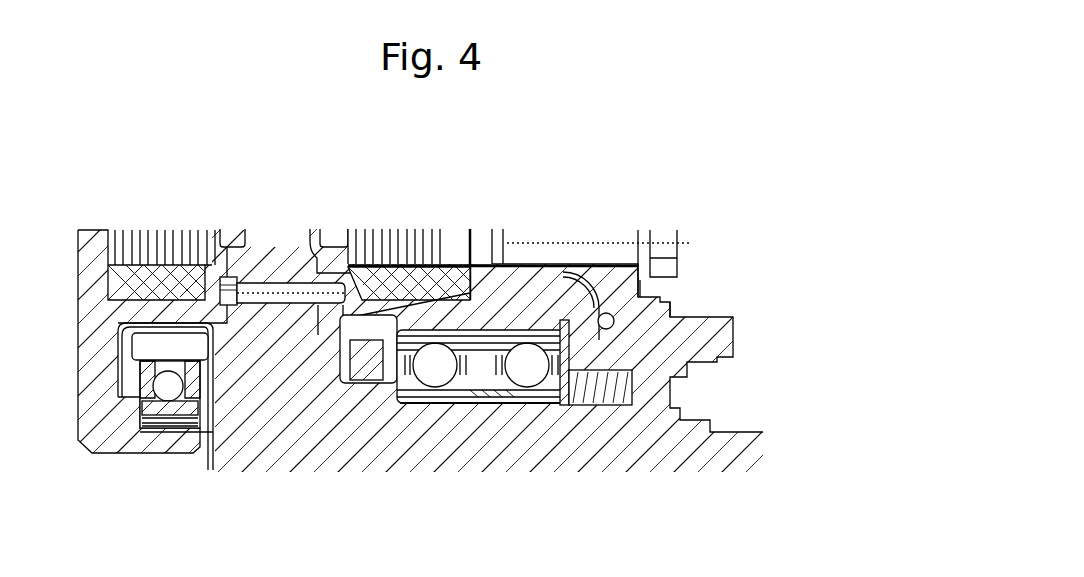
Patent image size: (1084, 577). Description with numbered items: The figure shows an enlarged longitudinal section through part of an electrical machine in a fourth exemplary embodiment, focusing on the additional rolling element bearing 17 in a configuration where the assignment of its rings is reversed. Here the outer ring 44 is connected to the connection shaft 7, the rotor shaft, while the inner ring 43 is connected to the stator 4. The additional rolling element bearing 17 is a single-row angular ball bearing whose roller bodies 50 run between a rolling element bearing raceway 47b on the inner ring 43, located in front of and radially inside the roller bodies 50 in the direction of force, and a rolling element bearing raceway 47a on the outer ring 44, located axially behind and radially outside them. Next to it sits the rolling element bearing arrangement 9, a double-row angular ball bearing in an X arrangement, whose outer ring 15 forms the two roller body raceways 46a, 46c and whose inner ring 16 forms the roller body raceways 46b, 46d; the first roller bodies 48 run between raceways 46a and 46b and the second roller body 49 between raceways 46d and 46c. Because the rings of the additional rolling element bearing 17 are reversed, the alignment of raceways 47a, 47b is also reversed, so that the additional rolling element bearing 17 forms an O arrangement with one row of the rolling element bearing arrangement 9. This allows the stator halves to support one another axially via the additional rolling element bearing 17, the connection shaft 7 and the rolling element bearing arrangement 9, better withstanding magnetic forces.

The stator 4 is at (142, 226).
The connection shaft 7 is at (382, 425).
The rolling element bearing arrangement 9 is at (530, 410).
The outer ring 15 is at (511, 332).
The inner ring 16 is at (485, 395).
The additional rolling element bearing 17 is at (207, 425).
The inner ring 43 is at (165, 416).
The outer ring 44 is at (175, 378).
The roller body raceway 46a is at (428, 350).
The roller body raceway 46b is at (437, 383).
The roller body raceway 46c is at (530, 360).
The roller body raceway 46d is at (550, 400).
The rolling element bearing raceway 47a is at (230, 283).
The rolling element bearing raceway 47b is at (177, 396).
The first roller bodies 48 is at (437, 370).
The second roller body 49 is at (530, 362).
The roller bodies 50 is at (173, 390).